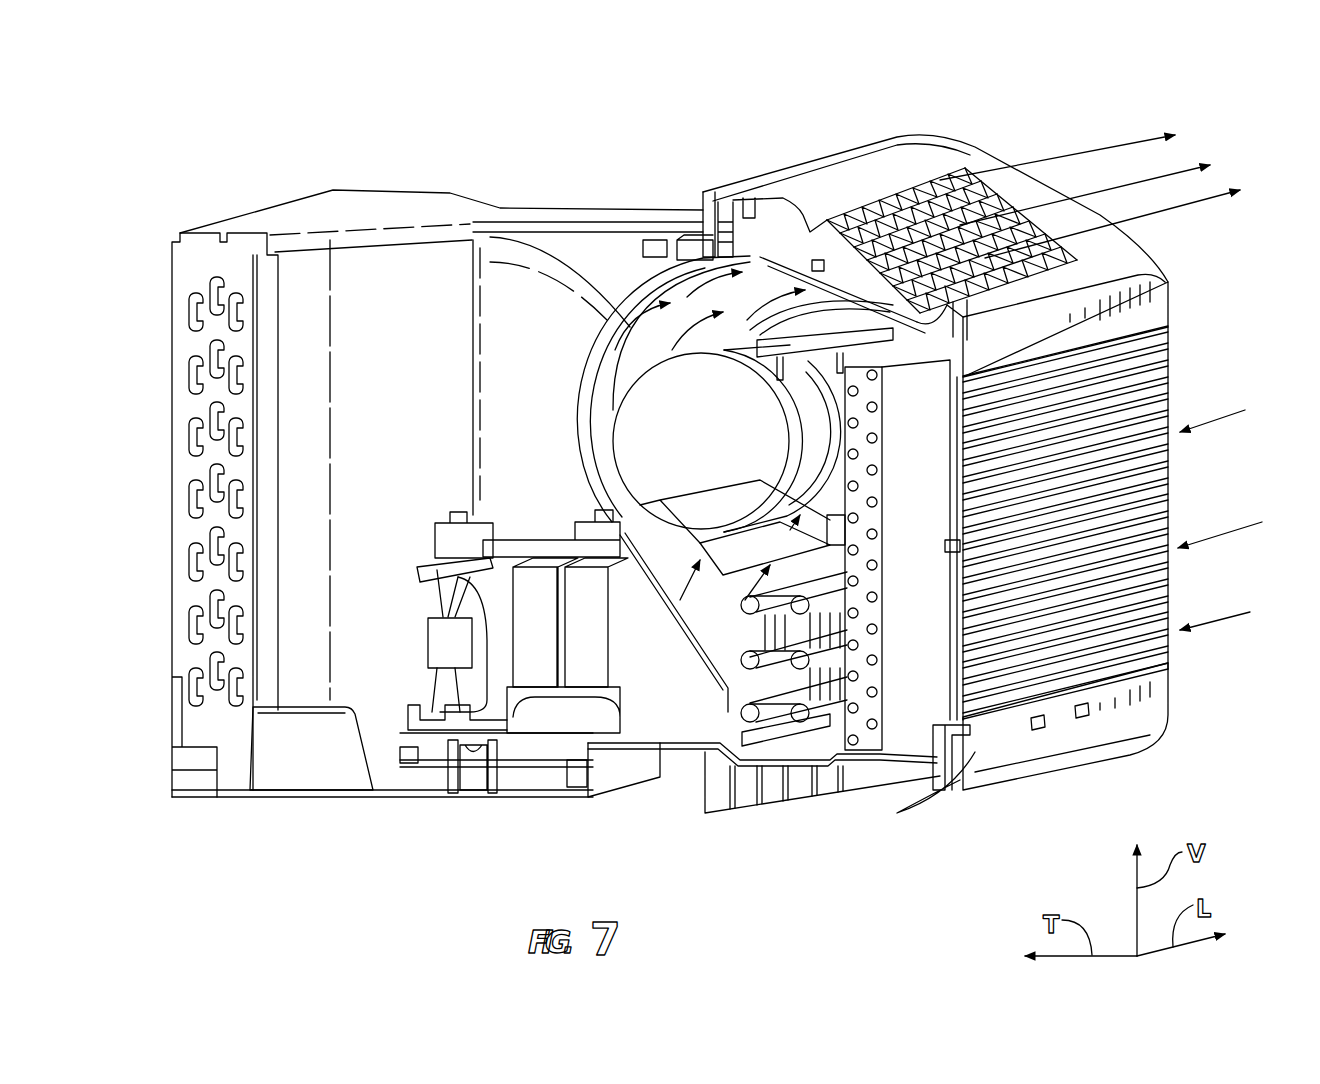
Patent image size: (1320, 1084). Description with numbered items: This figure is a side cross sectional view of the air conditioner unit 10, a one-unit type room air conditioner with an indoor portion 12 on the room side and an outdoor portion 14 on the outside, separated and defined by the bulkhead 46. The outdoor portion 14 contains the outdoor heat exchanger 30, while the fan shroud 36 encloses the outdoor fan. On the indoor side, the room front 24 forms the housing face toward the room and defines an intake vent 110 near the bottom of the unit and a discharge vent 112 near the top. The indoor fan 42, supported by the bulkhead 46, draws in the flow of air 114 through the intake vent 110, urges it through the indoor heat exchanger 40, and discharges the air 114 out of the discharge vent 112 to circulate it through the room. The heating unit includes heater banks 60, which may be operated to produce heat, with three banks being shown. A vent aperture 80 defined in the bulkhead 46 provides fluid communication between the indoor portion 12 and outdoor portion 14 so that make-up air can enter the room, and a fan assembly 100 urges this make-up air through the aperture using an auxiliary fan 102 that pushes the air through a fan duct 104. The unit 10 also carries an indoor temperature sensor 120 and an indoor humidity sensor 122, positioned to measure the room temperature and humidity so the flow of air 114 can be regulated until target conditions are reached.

The air conditioner unit 10 is at (665, 115).
The indoor portion 12 is at (760, 827).
The outdoor portion 14 is at (283, 819).
The room front 24 is at (1172, 320).
The outdoor heat exchanger 30 is at (190, 262).
The fan shroud 36 is at (360, 262).
The indoor heat exchanger 40 is at (875, 455).
The indoor fan 42 is at (717, 400).
The bulkhead 46 is at (613, 407).
The heater bank 60 is at (740, 609).
The vent aperture 80 is at (645, 662).
The fan assembly 100 is at (418, 690).
The auxiliary fan 102 is at (445, 700).
The fan duct 104 is at (533, 710).
The intake vent 110 is at (1100, 634).
The discharge vent 112 is at (953, 220).
The flow of air 114 is at (660, 288).
The indoor temperature sensor 120 is at (1085, 720).
The indoor humidity sensor 122 is at (817, 258).